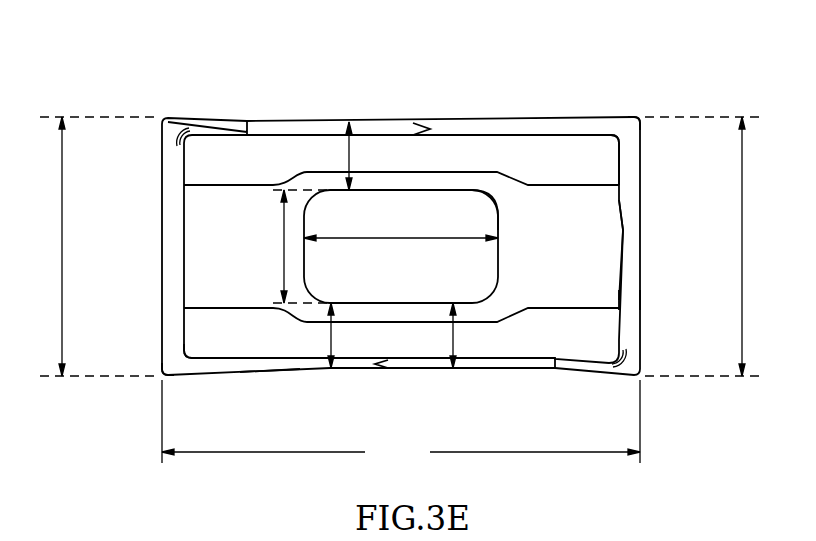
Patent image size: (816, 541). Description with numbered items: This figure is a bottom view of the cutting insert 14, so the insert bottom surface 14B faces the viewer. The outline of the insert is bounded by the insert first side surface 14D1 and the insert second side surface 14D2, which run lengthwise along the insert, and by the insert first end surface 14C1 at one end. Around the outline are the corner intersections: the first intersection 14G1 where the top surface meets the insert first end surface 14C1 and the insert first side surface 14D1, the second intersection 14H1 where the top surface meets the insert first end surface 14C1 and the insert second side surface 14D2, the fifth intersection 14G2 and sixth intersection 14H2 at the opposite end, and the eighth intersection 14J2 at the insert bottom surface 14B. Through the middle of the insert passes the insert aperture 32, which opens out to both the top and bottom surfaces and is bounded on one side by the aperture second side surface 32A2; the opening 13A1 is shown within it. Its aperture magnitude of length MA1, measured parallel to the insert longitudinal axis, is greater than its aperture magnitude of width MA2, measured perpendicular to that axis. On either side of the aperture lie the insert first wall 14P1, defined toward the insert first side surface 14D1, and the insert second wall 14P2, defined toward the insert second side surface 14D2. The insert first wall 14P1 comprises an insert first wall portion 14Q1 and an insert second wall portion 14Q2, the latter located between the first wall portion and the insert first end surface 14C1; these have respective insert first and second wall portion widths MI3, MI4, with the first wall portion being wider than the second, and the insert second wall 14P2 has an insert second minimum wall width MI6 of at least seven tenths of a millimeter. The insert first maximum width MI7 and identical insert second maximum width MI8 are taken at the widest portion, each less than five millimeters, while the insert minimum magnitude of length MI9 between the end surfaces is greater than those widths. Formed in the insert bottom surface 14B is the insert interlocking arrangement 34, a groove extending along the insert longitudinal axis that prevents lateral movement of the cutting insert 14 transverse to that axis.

The cutting insert 14 is at (598, 50).
The insert second side surface 14D2 is at (275, 116).
The insert first side surface 14D1 is at (541, 374).
The fifth intersection 14G2 is at (165, 118).
The first intersection 14G1 is at (640, 375).
The second intersection 14H1 is at (638, 117).
The sixth intersection 14H2 is at (162, 375).
The eighth intersection 14J2 is at (190, 358).
The insert second wall 14P2 is at (594, 163).
The insert first wall 14P1 is at (594, 331).
The insert bottom surface 14B is at (532, 156).
The insert interlocking arrangement 34 is at (599, 247).
The insert first end surface 14C1 is at (650, 302).
The opening 13A1 is at (438, 298).
The insert aperture 32 is at (479, 207).
The aperture second side surface 32A2 is at (445, 185).
The insert first wall portion 14Q1 is at (270, 380).
The insert second wall portion 14Q2 is at (414, 375).
The aperture magnitude of length MA1 is at (402, 237).
The aperture magnitude of width MA2 is at (283, 245).
The insert second minimum wall width MI6 is at (352, 128).
The insert first wall portion width MI3 is at (333, 345).
The insert second wall portion width MI4 is at (455, 338).
The insert second maximum width MI8 is at (100, 246).
The insert first maximum width MI7 is at (718, 246).
The insert minimum magnitude of length MI9 is at (401, 425).